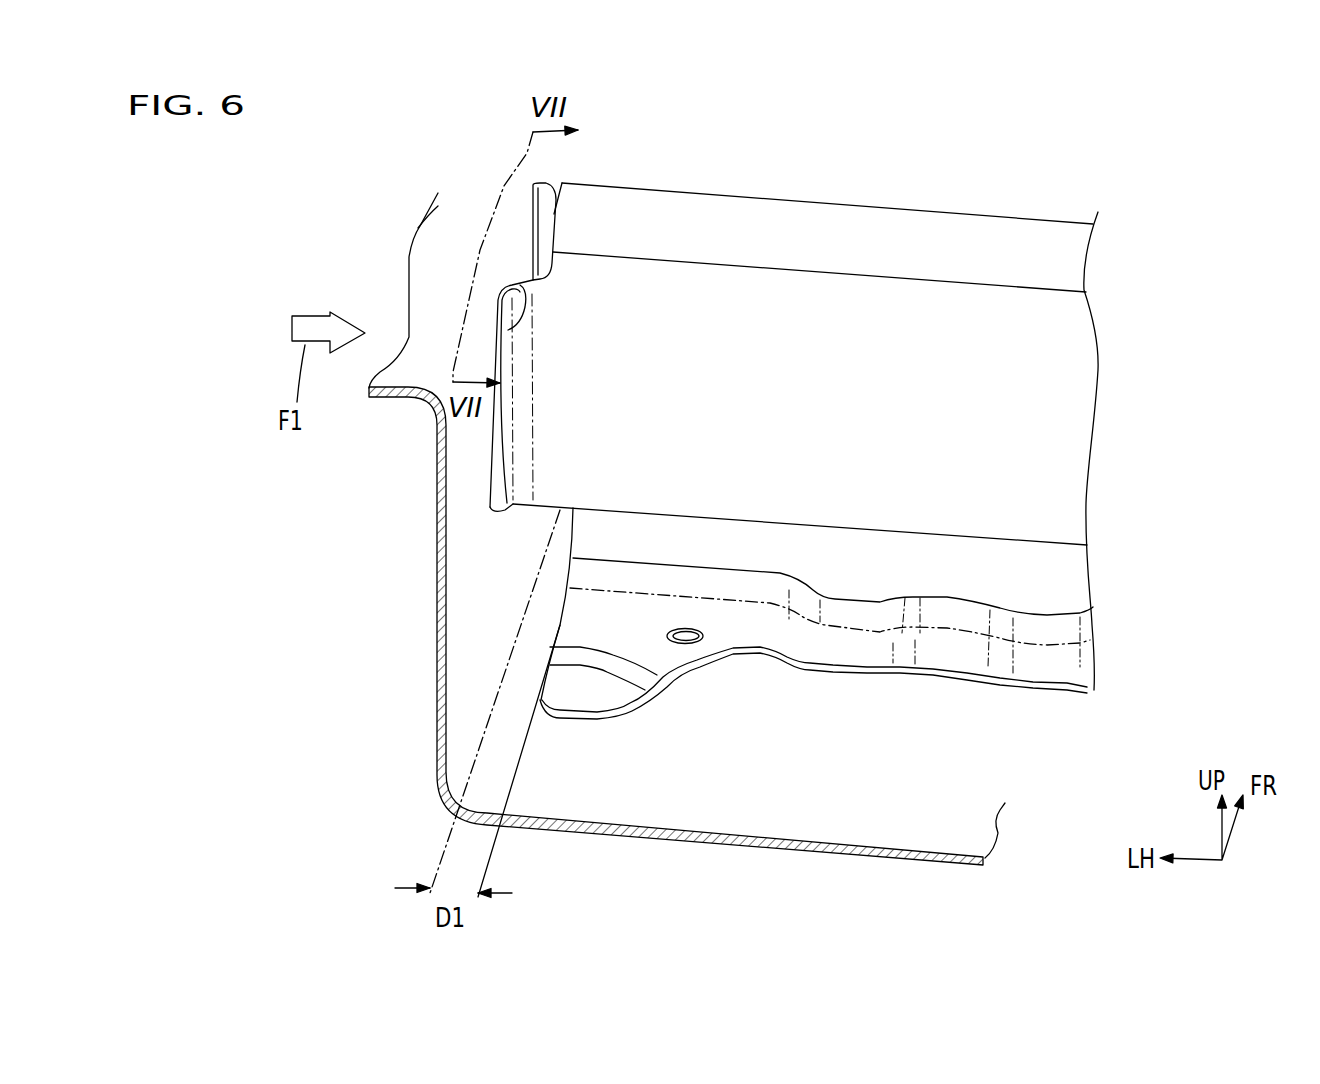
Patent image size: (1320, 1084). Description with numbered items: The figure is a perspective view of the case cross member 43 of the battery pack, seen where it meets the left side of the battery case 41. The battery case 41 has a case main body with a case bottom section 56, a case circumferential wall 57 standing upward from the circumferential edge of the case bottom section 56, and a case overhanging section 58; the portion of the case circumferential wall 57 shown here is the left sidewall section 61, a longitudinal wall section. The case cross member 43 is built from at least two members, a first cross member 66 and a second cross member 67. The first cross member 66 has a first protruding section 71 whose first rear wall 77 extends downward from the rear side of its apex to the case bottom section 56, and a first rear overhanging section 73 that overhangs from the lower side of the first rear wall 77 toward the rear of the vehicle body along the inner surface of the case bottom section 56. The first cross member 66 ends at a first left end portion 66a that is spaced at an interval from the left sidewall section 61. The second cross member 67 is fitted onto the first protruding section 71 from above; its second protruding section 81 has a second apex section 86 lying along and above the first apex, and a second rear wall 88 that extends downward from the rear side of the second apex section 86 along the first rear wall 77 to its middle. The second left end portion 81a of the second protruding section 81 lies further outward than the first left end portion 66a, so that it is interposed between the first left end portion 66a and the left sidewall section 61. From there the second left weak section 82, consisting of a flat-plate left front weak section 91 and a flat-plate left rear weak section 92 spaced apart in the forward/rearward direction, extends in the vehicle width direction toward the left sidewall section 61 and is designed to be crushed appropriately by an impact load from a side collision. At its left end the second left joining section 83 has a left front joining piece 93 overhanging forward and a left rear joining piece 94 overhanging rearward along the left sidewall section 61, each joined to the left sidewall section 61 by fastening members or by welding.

The battery case 41 is at (408, 293).
The case cross member 43 is at (795, 657).
The case bottom section 56 is at (690, 795).
The case circumferential wall 57 is at (470, 528).
The case overhanging section 58 is at (432, 272).
The left sidewall section 61 is at (634, 626).
The first cross member 66 is at (770, 695).
The first left end portion 66a is at (625, 543).
The second cross member 67 is at (1026, 431).
The first protruding section 71 is at (882, 570).
The first rear overhanging section 73 is at (867, 651).
The first rear wall 77 is at (1002, 580).
The second protruding section 81 is at (858, 388).
The second left end portion 81a is at (572, 217).
The second left weak section 82 is at (622, 290).
The second left joining section 83 is at (432, 209).
The second apex section 86 is at (935, 240).
The second rear wall 88 is at (1003, 338).
The left front weak section 91 is at (550, 233).
The left rear weak section 92 is at (540, 378).
The left front joining piece 93 is at (549, 201).
The left rear joining piece 94 is at (507, 285).